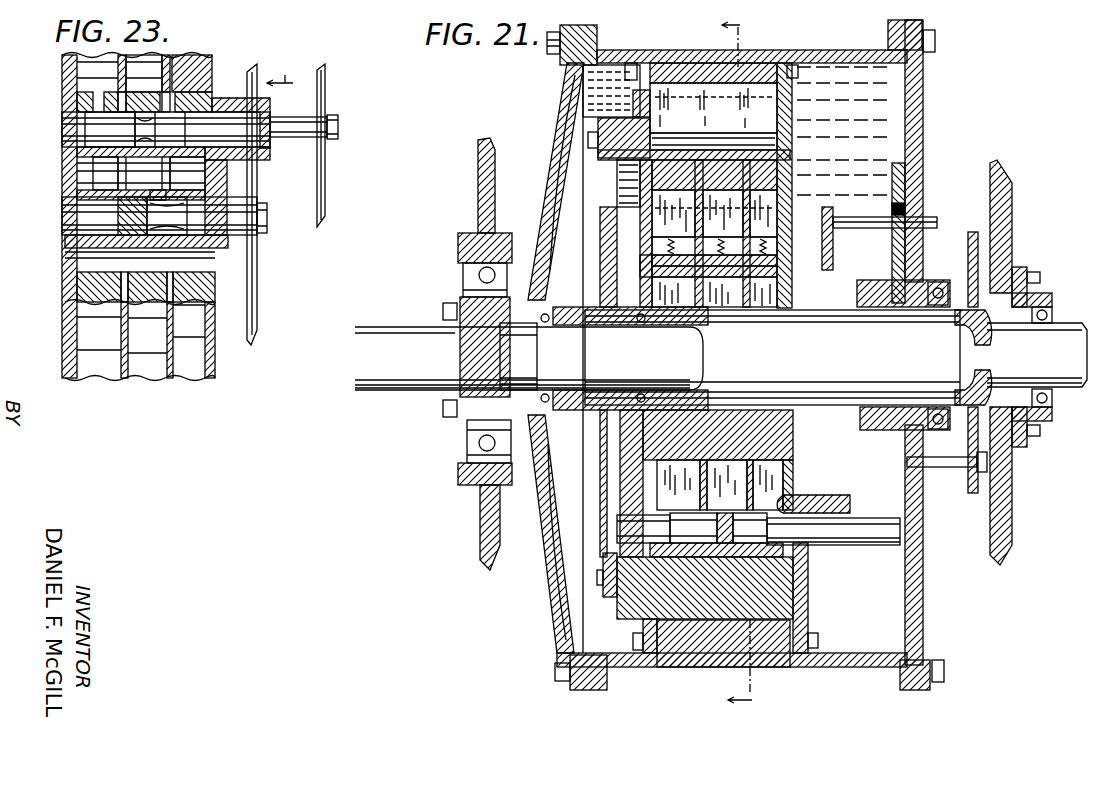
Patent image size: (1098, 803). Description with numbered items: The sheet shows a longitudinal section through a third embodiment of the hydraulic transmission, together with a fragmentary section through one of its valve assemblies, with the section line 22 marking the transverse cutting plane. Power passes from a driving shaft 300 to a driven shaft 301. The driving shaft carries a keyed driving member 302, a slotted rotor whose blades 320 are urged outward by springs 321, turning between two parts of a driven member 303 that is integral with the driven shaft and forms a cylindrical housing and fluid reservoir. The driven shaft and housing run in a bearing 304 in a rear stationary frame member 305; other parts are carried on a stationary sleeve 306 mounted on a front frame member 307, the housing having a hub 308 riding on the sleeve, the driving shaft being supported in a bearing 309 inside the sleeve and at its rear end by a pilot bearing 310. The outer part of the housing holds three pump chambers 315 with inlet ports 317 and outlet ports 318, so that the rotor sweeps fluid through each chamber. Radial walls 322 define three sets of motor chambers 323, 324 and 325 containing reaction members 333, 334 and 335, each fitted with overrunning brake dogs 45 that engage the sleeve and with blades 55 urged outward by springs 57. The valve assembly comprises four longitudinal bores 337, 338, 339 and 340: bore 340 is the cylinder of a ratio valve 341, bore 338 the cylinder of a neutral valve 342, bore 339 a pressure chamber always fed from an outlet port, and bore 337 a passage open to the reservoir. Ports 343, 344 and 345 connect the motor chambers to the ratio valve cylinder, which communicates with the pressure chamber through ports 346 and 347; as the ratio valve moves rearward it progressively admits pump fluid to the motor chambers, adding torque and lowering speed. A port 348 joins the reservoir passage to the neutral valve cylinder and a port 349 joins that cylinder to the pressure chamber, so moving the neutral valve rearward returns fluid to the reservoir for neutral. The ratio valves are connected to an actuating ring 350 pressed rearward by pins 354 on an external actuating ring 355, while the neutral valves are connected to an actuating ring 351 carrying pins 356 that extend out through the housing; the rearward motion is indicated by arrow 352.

In FIG. 21, the section line 22— 22 is at (747, 363).
In FIG. 21, the overrunning brake dogs 45 is at (665, 294).
In FIG. 23, the blades 55 is at (192, 332).
In FIG. 21, the blades 55 is at (768, 492).
In FIG. 21, the springs 57 is at (668, 250).
In FIG. 21, the driving shaft 300 is at (1070, 327).
In FIG. 21, the driven shaft 301 is at (393, 337).
In FIG. 21, the driving member 302 is at (637, 597).
In FIG. 21, the driven member 303 is at (593, 687).
In FIG. 21, the bearing 304 is at (473, 442).
In FIG. 21, the stationary frame member 305 is at (478, 502).
In FIG. 21, the sleeve 306 is at (842, 355).
In FIG. 21, the frame member 307 is at (1007, 458).
In FIG. 21, the hub 308 is at (860, 430).
In FIG. 21, the bearing 309 is at (987, 342).
In FIG. 21, the pilot bearing 310 is at (517, 335).
In FIG. 21, the pump chambers 315 is at (685, 625).
In FIG. 21, the inlet ports 317 is at (785, 90).
In FIG. 21, the outlet ports 318 is at (797, 592).
In FIG. 21, the blades 320 is at (687, 124).
In FIG. 21, the springs 321 is at (718, 143).
In FIG. 21, the radial walls 322 is at (740, 170).
In FIG. 23, the motor chambers 323 is at (193, 378).
In FIG. 21, the motor chambers 323 is at (770, 193).
In FIG. 23, the motor chambers 324 is at (148, 378).
In FIG. 21, the motor chambers 324 is at (733, 202).
In FIG. 23, the motor chambers 325 is at (100, 392).
In FIG. 21, the motor chambers 325 is at (660, 197).
In FIG. 21, the reaction member 333 is at (778, 262).
In FIG. 21, the reaction member 334 is at (778, 277).
In FIG. 21, the reaction member 335 is at (657, 266).
In FIG. 23, the longitudinal bore 337 is at (82, 262).
In FIG. 23, the longitudinal bore 338 is at (80, 222).
In FIG. 23, the longitudinal bore 339 is at (78, 172).
In FIG. 23, the longitudinal bore 340 is at (68, 136).
In FIG. 21, the longitudinal bore 340 is at (830, 543).
In FIG. 23, the ratio valve 341 is at (312, 112).
In FIG. 21, the ratio valve 341 is at (860, 517).
In FIG. 23, the neutral valve 342 is at (230, 215).
In FIG. 23, the port 343 is at (205, 92).
In FIG. 21, the port 343 is at (773, 500).
In FIG. 23, the port 344 is at (158, 62).
In FIG. 21, the port 344 is at (737, 513).
In FIG. 23, the port 345 is at (95, 102).
In FIG. 21, the port 345 is at (680, 513).
In FIG. 23, the port 346 is at (192, 160).
In FIG. 23, the port 347 is at (97, 160).
In FIG. 23, the port 348 is at (137, 248).
In FIG. 23, the port 349 is at (158, 170).
In FIG. 23, the actuating ring 350 is at (322, 86).
In FIG. 21, the actuating ring 350 is at (902, 163).
In FIG. 23, the actuating ring 351 is at (258, 300).
In FIG. 21, the actuating ring 351 is at (833, 212).
In FIG. 23, the arrow 352 is at (287, 70).
In FIG. 21, the pins 354 is at (950, 467).
In FIG. 21, the external actuating ring 355 is at (977, 477).
In FIG. 21, the pins 356 is at (935, 215).